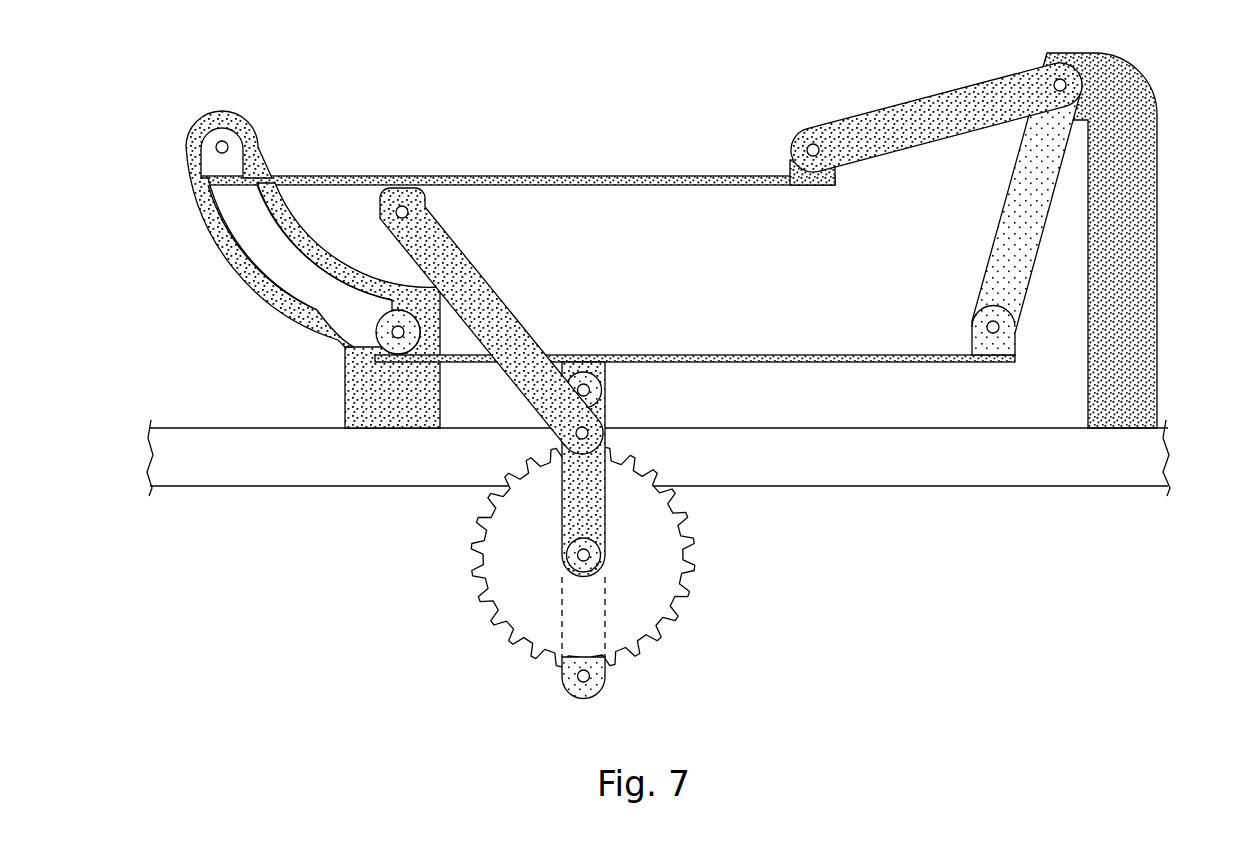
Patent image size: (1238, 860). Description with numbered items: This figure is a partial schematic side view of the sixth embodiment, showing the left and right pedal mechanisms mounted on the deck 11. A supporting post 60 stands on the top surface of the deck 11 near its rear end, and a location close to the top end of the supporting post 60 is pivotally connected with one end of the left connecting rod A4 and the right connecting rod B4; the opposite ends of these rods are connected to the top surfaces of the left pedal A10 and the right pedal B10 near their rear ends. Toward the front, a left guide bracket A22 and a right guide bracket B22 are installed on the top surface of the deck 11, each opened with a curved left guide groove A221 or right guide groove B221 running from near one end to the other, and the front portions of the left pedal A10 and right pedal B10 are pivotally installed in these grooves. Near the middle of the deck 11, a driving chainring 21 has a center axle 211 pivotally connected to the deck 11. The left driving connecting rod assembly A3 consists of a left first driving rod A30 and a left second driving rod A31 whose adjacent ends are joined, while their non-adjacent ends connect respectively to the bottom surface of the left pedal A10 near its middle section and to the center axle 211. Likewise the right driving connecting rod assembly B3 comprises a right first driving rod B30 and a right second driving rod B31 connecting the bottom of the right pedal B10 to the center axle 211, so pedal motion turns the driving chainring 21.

The deck 11 is at (210, 470).
The driving chainring 21 is at (645, 612).
The center axle 211 is at (587, 553).
The supporting post 60 is at (1143, 296).
The left driving connecting rod assembly A3 is at (458, 422).
The left first driving rod A30 is at (525, 387).
The left second driving rod A31 is at (565, 522).
The left connecting rod A4 is at (896, 118).
The left pedal A10 is at (590, 175).
The left guide bracket A22 is at (240, 269).
The left guide groove A221 is at (216, 247).
The right driving connecting rod assembly B3 is at (744, 530).
The right first driving rod B30 is at (607, 410).
The right second driving rod B31 is at (603, 683).
The right connecting rod B4 is at (995, 250).
The right pedal B10 is at (787, 355).
The right guide bracket B22 is at (240, 269).
The right guide groove B221 is at (263, 287).